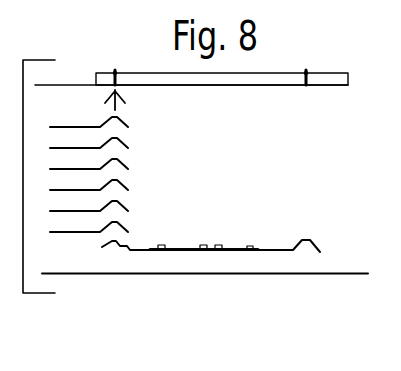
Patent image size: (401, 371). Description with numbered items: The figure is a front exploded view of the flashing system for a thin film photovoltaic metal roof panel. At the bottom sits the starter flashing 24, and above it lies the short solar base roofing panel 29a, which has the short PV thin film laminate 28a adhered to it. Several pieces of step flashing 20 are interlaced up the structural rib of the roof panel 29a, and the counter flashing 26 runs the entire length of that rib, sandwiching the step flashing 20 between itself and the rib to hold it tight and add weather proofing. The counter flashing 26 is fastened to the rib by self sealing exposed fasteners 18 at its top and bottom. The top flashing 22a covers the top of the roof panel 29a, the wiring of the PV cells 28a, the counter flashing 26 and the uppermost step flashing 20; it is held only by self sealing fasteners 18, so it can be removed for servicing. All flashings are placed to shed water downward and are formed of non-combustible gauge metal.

The self sealing exposed fastener 18 is at (115, 72).
The step flashing 20 is at (127, 123).
The top flashing 22a is at (277, 80).
The starter flashing 24 is at (115, 274).
The counter flashing 26 is at (107, 93).
The short PV thin film laminate 28a is at (218, 246).
The short solar base roofing panel 29a is at (313, 243).